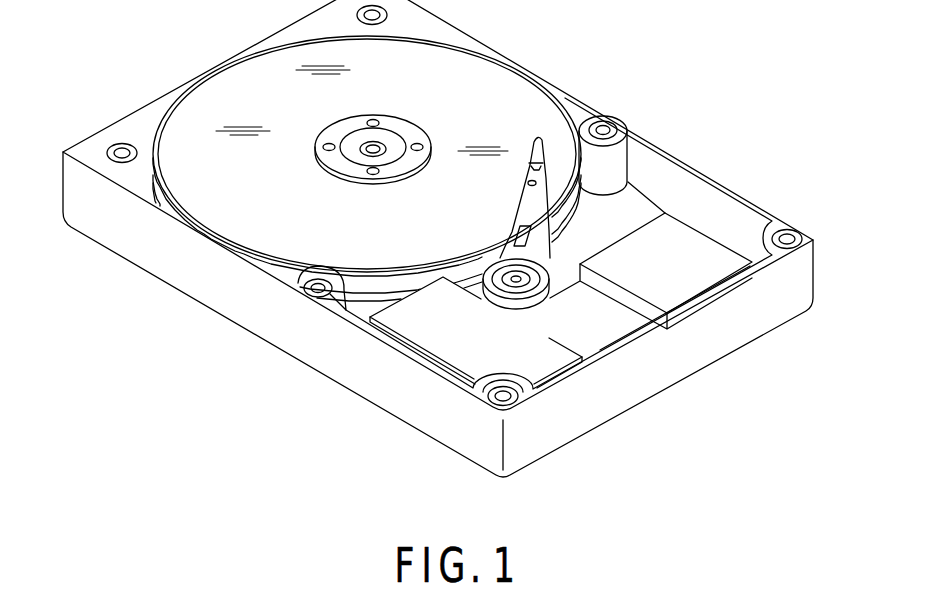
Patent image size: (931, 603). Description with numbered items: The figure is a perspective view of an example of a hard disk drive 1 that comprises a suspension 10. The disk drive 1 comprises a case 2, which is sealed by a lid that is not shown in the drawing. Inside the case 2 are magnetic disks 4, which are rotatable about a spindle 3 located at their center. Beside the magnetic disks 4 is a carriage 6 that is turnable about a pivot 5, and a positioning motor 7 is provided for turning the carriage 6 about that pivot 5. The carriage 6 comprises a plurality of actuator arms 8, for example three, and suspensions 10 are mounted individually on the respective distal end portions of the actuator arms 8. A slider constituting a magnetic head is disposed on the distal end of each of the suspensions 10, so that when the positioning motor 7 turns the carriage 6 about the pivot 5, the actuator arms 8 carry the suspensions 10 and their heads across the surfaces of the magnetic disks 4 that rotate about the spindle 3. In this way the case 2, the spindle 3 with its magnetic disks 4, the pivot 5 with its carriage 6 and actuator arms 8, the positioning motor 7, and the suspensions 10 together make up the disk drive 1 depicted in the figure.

The disk drive 1 is at (708, 57).
The case 2 is at (248, 318).
The spindle 3 is at (387, 138).
The magnetic disks 4 is at (478, 82).
The pivot 5 is at (521, 283).
The carriage 6 is at (535, 253).
The positioning motor 7 is at (445, 353).
The actuator arms 8 is at (540, 200).
The suspensions 10 is at (534, 146).